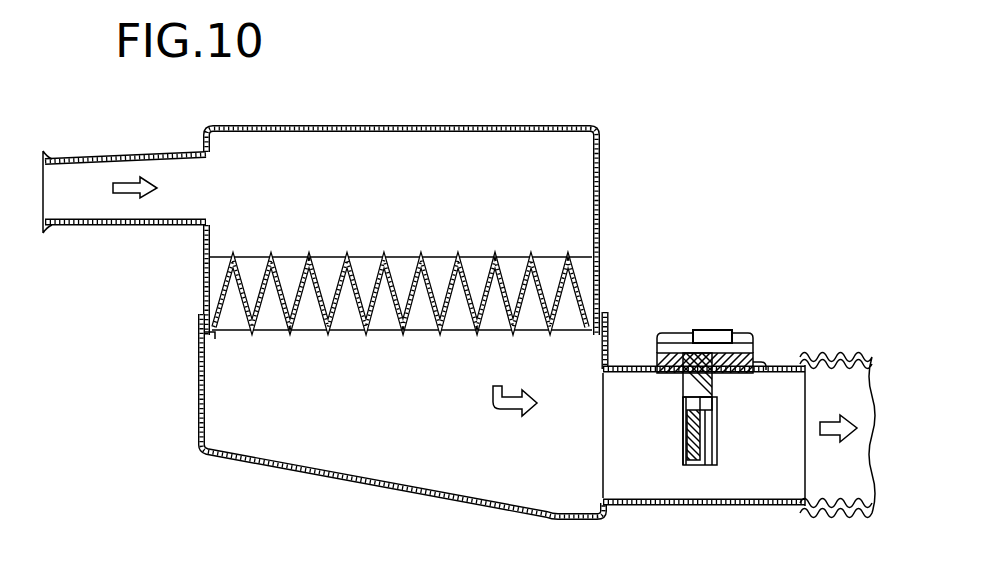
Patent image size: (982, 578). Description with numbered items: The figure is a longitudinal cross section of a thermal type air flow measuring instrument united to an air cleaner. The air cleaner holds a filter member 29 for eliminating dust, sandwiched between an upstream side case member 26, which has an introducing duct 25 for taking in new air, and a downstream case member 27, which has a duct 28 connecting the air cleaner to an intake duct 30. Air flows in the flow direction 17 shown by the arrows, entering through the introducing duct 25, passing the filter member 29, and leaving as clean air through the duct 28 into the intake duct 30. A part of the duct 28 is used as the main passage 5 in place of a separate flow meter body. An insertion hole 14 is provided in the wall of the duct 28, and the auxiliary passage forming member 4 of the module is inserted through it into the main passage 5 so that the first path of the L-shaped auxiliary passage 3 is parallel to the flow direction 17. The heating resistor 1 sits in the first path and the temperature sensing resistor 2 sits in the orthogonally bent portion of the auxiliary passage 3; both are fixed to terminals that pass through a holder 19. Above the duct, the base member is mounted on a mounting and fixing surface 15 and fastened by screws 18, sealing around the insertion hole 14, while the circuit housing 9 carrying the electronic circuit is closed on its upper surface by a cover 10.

The heating resistor 1 is at (682, 402).
The temperature sensing resistor 2 is at (712, 403).
The auxiliary passage 3 is at (708, 437).
The auxiliary passage forming member 4 is at (718, 455).
The main passage 5 is at (632, 472).
The circuit housing 9 is at (717, 352).
The cover 10 is at (670, 332).
The insertion hole 14 is at (656, 334).
The mounting and fixing surface 15 is at (750, 346).
The flow direction 17 is at (127, 178).
The screws 18 is at (728, 340).
The holder 19 is at (698, 356).
The introducing duct 25 is at (94, 159).
The upstream side case member 26 is at (508, 123).
The downstream case member 27 is at (200, 387).
The duct 28 is at (722, 500).
The filter member 29 is at (318, 273).
The intake duct 30 is at (862, 350).